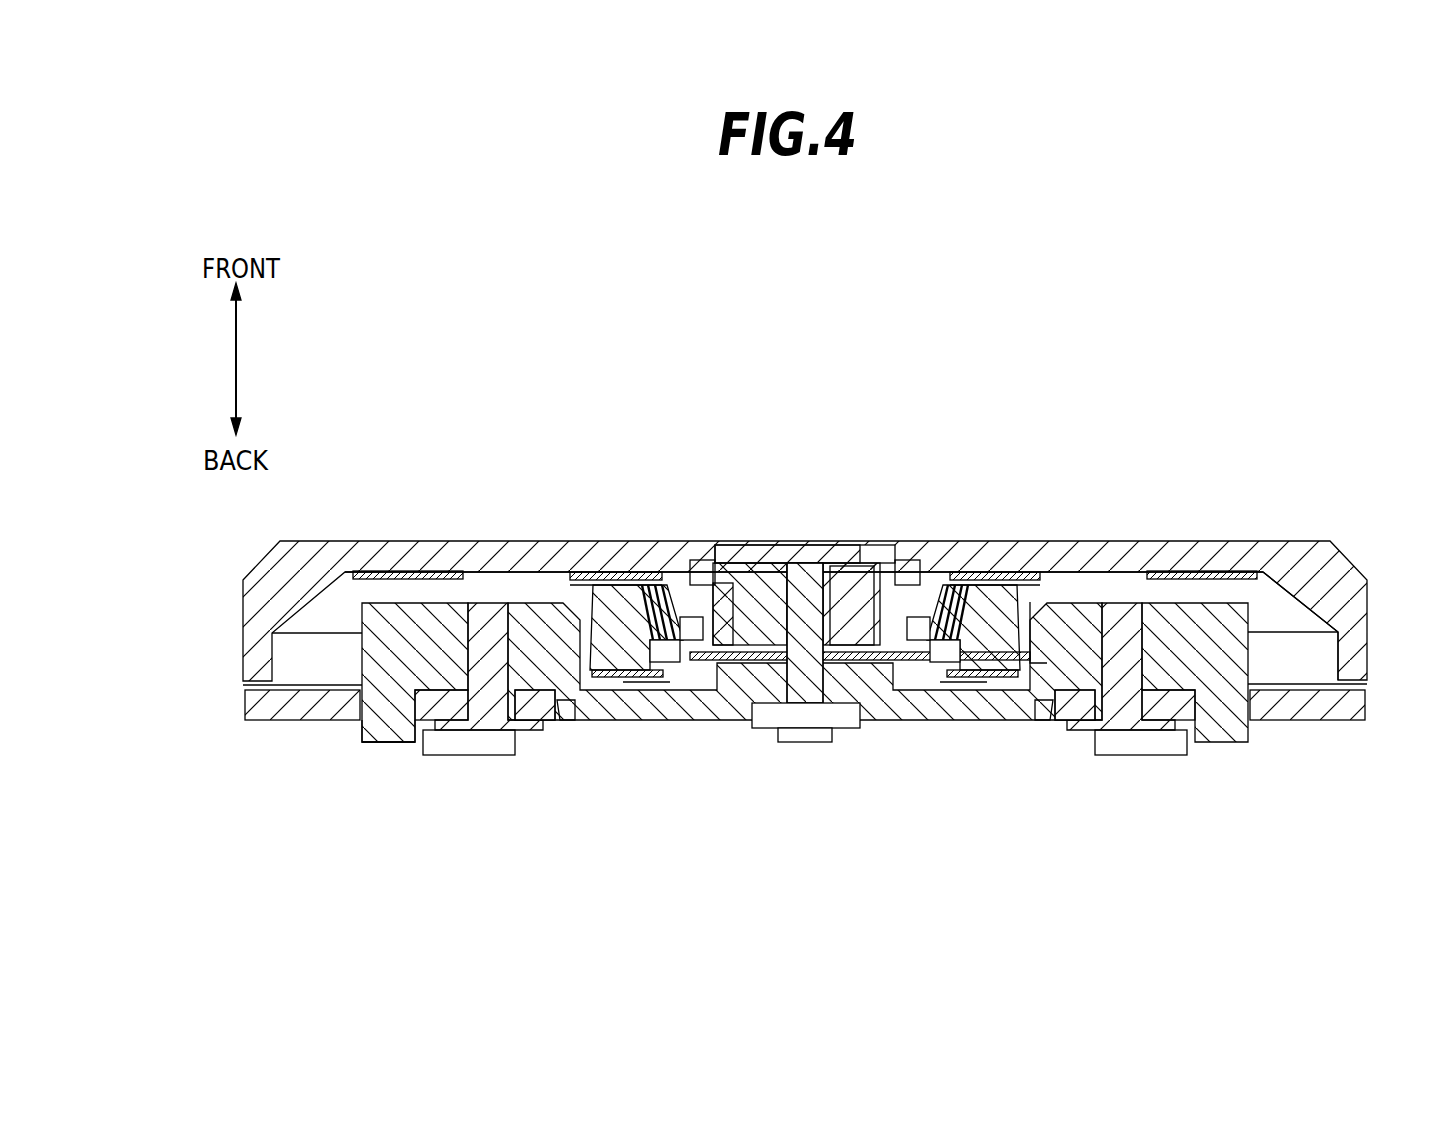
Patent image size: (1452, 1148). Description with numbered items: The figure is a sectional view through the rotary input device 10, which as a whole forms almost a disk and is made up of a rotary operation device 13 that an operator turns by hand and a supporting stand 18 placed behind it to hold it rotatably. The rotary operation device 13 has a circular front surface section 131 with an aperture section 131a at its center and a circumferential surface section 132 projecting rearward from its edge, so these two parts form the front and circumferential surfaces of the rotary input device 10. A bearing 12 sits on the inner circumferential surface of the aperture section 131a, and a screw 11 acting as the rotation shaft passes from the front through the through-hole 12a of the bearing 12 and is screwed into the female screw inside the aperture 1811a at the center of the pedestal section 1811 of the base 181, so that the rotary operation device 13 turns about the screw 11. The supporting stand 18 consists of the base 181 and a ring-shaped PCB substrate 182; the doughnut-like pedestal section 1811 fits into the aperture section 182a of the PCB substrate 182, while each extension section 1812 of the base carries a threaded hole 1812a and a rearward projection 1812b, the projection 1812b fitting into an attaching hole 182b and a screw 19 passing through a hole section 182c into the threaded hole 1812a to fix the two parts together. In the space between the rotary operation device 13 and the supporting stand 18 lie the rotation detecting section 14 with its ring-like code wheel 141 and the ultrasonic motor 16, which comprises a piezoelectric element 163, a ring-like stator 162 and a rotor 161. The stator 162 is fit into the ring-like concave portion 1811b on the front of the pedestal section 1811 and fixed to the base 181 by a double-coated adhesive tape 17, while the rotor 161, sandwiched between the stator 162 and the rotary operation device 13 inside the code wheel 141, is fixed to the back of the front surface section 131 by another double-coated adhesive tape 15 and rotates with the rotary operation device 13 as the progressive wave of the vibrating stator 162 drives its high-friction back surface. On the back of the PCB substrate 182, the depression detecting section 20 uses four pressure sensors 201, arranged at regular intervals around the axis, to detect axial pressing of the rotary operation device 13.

The rotary input device 10 is at (1013, 396).
The screw 11 is at (840, 553).
The bearing 12 is at (860, 585).
The through-hole 12a is at (793, 567).
The rotary operation device 13 is at (1318, 543).
The front surface section 131 is at (1268, 550).
The aperture section 131a is at (748, 602).
The circumferential surface section 132 is at (1350, 610).
The rotation detecting section 14 is at (1197, 516).
The code wheel 141 is at (1183, 572).
The double-coated adhesive tape 15 is at (990, 570).
The ultrasonic motor 16 is at (775, 634).
The rotor 161 is at (570, 598).
The stator 162 is at (622, 607).
The piezoelectric element 163 is at (622, 680).
The double-coated adhesive tape 17 is at (703, 662).
The supporting stand 18 is at (753, 634).
The base 181 is at (352, 572).
The PCB substrate 182 is at (253, 710).
The aperture section 182a is at (573, 722).
The attaching hole 182b is at (362, 723).
The hole section 182c is at (467, 727).
The pedestal section 1811 is at (978, 712).
The aperture 1811a is at (817, 690).
The concave portion 1811b is at (1029, 627).
The extension section 1812 is at (425, 620).
The threaded hole 1812a is at (483, 625).
The projection 1812b is at (390, 733).
The screw 19 is at (497, 712).
The depression detecting section 20 is at (809, 791).
The pressure sensor 201 is at (433, 737).